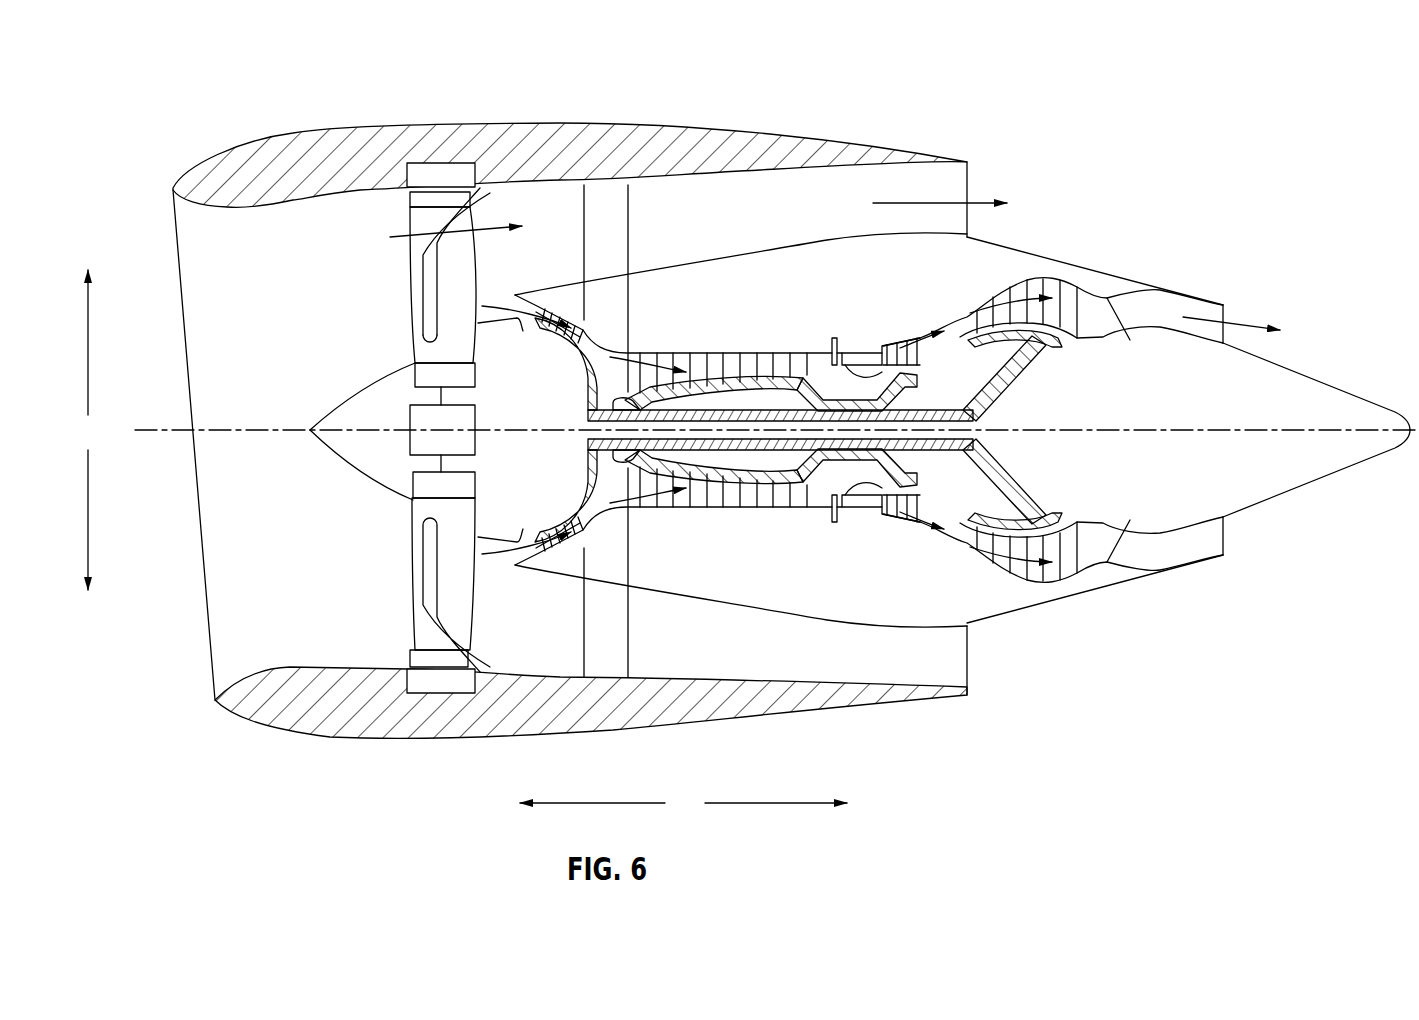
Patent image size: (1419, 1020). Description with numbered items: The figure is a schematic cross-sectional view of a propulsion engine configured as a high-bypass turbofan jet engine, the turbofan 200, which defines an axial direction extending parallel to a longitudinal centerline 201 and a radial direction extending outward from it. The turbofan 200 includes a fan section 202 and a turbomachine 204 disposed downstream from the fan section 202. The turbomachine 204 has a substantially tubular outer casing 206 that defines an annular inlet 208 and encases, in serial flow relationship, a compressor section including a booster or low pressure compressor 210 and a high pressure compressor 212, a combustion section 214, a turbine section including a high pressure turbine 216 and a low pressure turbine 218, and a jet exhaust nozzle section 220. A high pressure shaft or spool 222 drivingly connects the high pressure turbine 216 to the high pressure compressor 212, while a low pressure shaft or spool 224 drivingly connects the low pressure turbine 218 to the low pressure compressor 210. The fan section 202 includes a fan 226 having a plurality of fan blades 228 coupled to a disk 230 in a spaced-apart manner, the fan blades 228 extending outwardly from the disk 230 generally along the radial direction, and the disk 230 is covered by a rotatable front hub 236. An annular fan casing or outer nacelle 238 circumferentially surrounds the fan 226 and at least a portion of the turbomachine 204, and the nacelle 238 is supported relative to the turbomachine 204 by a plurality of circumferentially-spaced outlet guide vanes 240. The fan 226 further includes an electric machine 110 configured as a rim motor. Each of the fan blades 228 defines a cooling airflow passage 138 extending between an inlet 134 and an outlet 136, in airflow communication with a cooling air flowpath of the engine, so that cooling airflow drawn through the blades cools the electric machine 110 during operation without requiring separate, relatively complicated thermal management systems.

The turbofan 200 is at (1128, 129).
The longitudinal centerline 201 is at (1287, 428).
The fan section 202 is at (364, 205).
The turbomachine 204 is at (748, 226).
The outer casing 206 is at (807, 618).
The annular inlet 208 is at (528, 541).
The low pressure compressor 210 is at (562, 569).
The high pressure compressor 212 is at (660, 494).
The combustion section 214 is at (852, 499).
The high pressure turbine 216 is at (970, 487).
The low pressure turbine 218 is at (1060, 575).
The jet exhaust nozzle section 220 is at (1128, 549).
The high pressure shaft 222 is at (858, 400).
The low pressure shaft 224 is at (930, 407).
The fan 226 is at (372, 488).
The fan blades 228 is at (410, 600).
The disk 230 is at (428, 378).
The rotatable front hub 236 is at (327, 450).
The outer nacelle 238 is at (467, 737).
The outlet guide vanes 240 is at (628, 213).
The electric machine 110 is at (434, 159).
The inlet 134 is at (407, 343).
The outlet 136 is at (496, 198).
The cooling airflow passage 138 is at (419, 293).